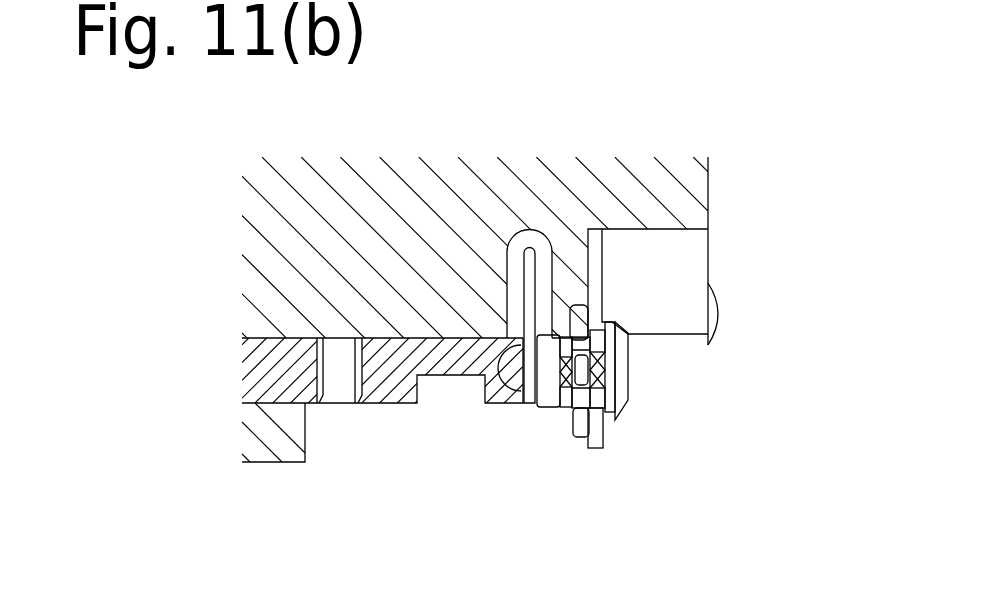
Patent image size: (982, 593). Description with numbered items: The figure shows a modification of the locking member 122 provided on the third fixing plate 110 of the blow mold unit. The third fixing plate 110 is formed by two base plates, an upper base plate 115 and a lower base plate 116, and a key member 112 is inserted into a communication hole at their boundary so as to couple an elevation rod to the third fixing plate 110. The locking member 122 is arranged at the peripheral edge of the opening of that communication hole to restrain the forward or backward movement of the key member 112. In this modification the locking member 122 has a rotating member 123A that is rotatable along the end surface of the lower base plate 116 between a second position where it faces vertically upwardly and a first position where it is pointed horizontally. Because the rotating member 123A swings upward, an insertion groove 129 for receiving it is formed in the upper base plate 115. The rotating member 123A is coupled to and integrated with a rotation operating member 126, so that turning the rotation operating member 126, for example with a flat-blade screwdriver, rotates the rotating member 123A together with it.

The third fixing plate 110 is at (138, 270).
The upper base plate 115 is at (257, 228).
The lower base plate 116 is at (260, 433).
The key member 112 is at (387, 388).
The insertion groove 129 is at (515, 258).
The rotating member 123A is at (529, 265).
The rotation operating member 126 is at (622, 380).
The locking member 122 is at (590, 505).